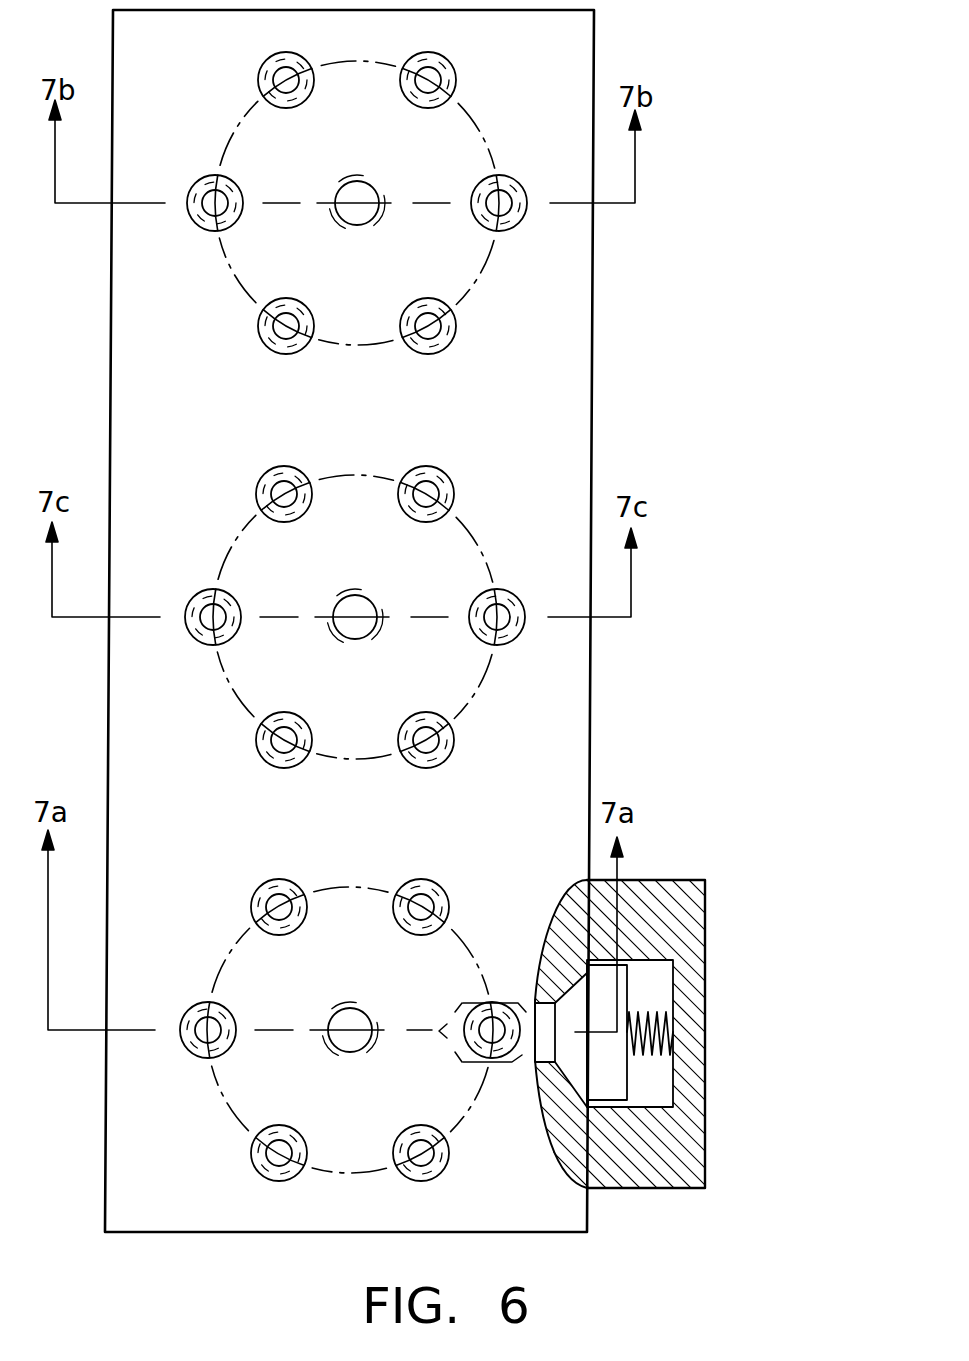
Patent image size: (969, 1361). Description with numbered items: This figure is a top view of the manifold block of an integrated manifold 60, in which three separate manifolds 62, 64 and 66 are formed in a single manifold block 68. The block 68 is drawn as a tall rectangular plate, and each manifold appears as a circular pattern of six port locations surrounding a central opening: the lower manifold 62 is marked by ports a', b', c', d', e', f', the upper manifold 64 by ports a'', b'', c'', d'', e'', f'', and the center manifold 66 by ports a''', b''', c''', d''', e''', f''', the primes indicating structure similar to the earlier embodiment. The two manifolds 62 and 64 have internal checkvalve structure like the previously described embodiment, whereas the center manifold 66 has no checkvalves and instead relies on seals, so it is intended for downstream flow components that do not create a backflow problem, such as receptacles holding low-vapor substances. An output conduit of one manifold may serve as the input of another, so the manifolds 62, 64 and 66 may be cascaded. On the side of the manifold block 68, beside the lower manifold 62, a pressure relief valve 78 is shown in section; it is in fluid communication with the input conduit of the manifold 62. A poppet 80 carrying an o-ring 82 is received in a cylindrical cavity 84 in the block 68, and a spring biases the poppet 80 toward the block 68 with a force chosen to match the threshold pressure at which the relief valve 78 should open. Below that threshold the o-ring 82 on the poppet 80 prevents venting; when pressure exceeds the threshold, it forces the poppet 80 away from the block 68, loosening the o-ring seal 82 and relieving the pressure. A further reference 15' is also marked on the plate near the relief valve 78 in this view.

The integrated manifold 60 is at (808, 117).
The manifold 62 is at (792, 875).
The manifold 64 is at (662, 48).
The center manifold 66 is at (657, 462).
The manifold block 68 is at (231, 1244).
The panel 15' is at (374, 648).
The pressure relief valve 78 is at (732, 1092).
The poppet 80 is at (616, 1094).
The o-ring 82 is at (540, 1084).
The cylindrical cavity 84 is at (524, 1001).
The bolt hole a' is at (490, 1014).
The bolt hole b' is at (441, 904).
The bolt hole c' is at (262, 906).
The bolt hole d' is at (199, 1017).
The bolt hole e' is at (257, 1153).
The bolt hole f' is at (439, 1155).
The bolt hole a'' is at (510, 189).
The bolt hole b'' is at (450, 76).
The bolt hole c'' is at (269, 79).
The bolt hole d'' is at (205, 189).
The bolt hole e'' is at (265, 326).
The bolt hole f'' is at (447, 328).
The bolt hole a''' is at (510, 602).
The bolt hole b''' is at (448, 489).
The bolt hole c''' is at (266, 493).
The bolt hole d''' is at (203, 603).
The bolt hole e''' is at (262, 740).
The bolt hole f''' is at (447, 742).